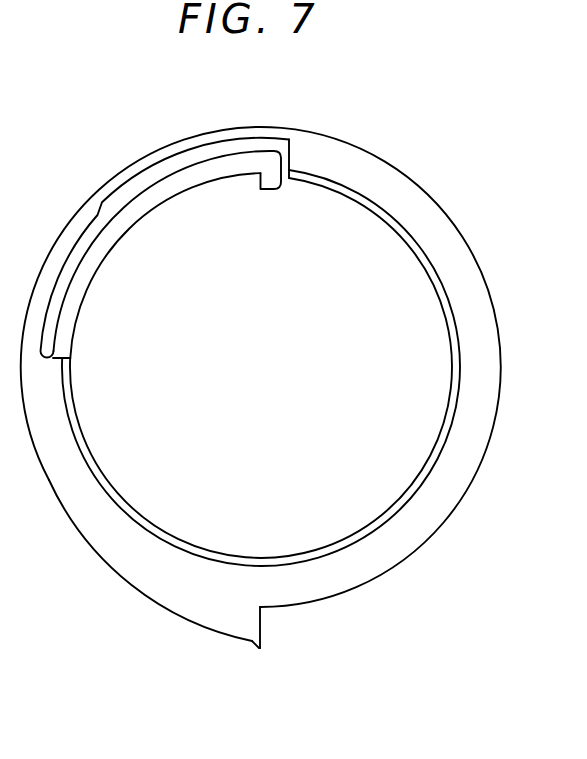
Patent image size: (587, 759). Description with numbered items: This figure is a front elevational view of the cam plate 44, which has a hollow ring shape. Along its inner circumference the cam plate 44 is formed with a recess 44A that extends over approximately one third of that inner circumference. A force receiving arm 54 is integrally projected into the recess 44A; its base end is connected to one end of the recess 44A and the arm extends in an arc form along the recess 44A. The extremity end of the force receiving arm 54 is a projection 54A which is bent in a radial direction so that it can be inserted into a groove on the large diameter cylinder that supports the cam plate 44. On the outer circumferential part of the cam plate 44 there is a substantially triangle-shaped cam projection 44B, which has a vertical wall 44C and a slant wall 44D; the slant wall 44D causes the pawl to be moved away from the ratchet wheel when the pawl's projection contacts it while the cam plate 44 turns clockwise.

The cam plate 44 is at (452, 249).
The recess 44A is at (209, 146).
The cam projection 44B is at (211, 618).
The vertical wall 44C is at (262, 627).
The slant wall 44D is at (247, 645).
The force receiving arm 54 is at (166, 197).
The projection 54A is at (271, 191).